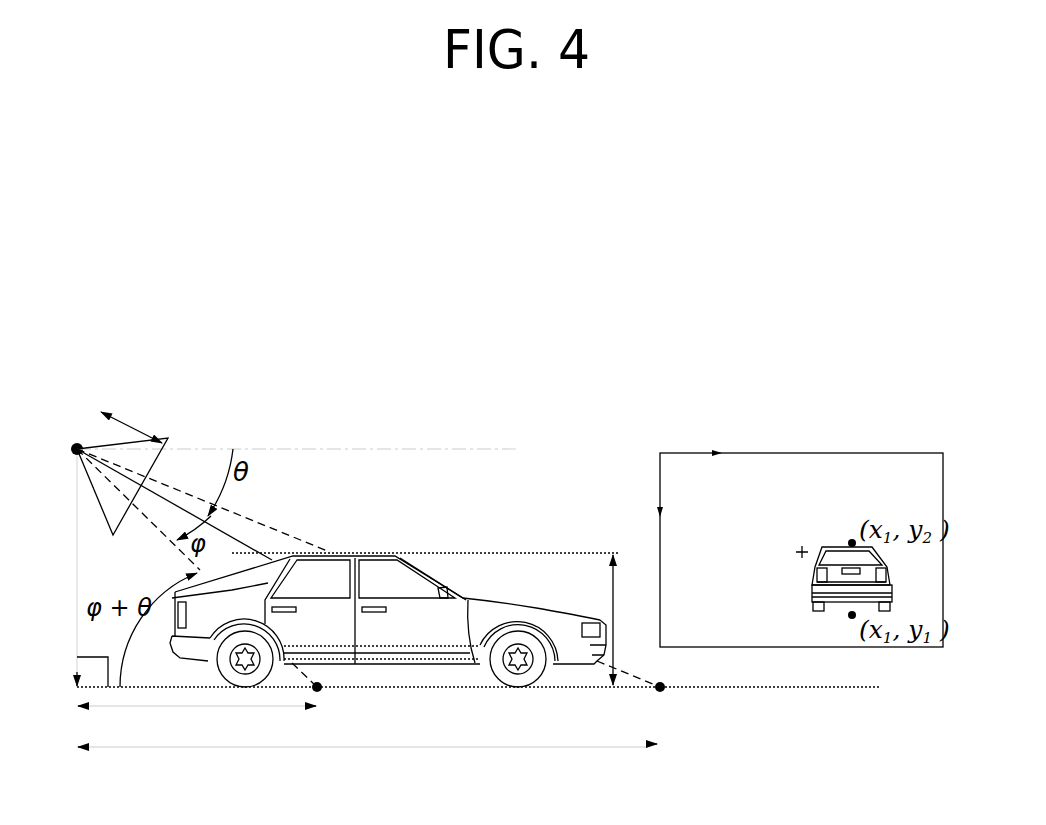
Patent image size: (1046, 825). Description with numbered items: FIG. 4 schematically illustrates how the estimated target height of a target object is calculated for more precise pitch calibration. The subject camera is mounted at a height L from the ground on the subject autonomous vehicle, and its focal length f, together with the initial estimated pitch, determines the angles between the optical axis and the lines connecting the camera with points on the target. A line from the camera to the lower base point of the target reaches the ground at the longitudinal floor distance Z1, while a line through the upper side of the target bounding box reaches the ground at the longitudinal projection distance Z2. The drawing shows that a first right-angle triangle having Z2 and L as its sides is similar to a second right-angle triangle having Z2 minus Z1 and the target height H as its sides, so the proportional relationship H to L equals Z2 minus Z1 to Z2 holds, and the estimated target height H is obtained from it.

The height of the subject camera from the ground L is at (78, 571).
The focal length of the subject camera f is at (131, 420).
The estimated target height H is at (625, 620).
The longitudinal floor distance Z1 is at (197, 725).
The longitudinal projection distance Z2 is at (367, 766).